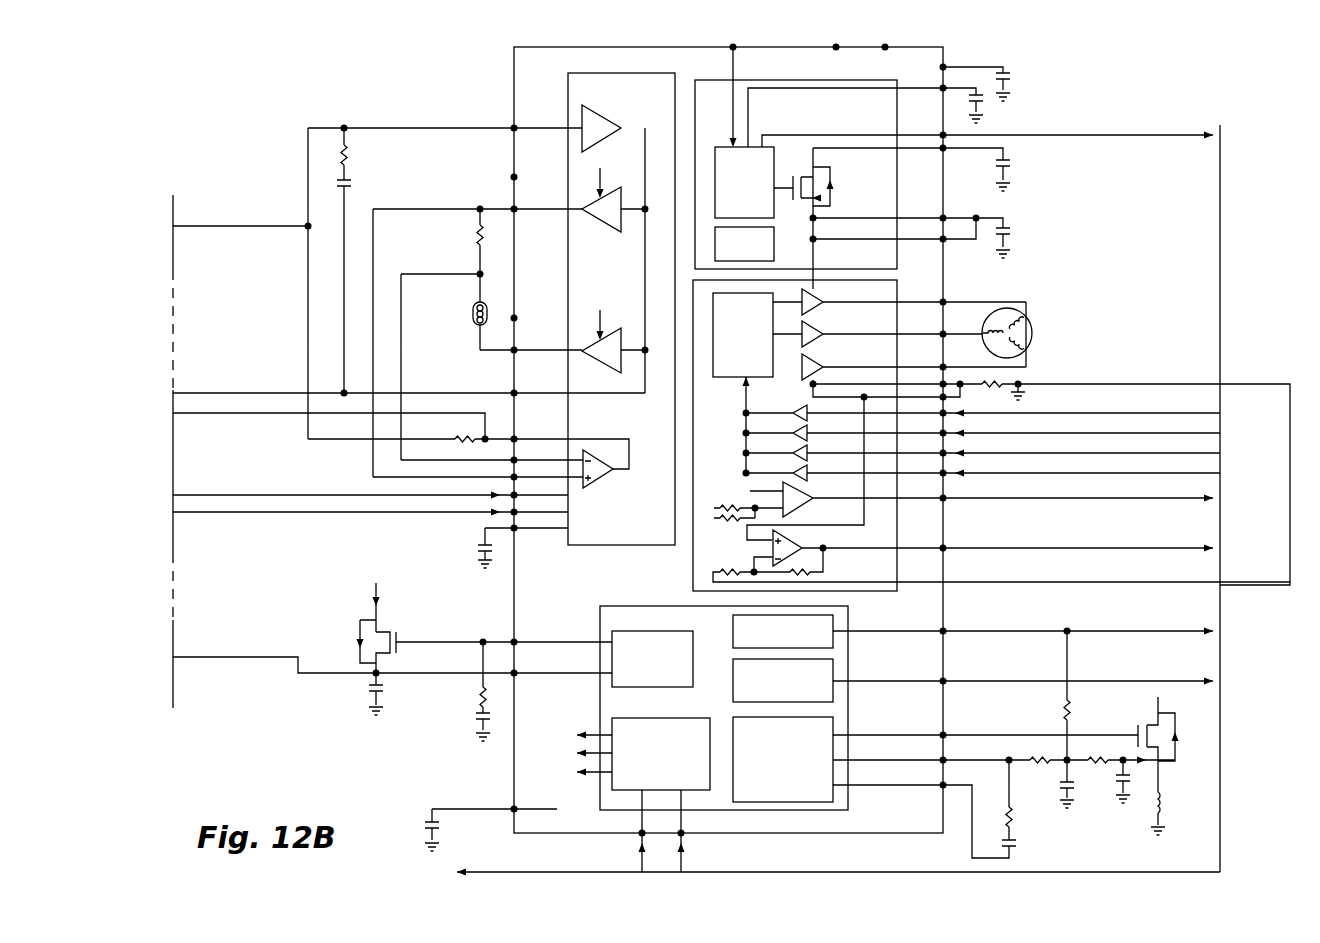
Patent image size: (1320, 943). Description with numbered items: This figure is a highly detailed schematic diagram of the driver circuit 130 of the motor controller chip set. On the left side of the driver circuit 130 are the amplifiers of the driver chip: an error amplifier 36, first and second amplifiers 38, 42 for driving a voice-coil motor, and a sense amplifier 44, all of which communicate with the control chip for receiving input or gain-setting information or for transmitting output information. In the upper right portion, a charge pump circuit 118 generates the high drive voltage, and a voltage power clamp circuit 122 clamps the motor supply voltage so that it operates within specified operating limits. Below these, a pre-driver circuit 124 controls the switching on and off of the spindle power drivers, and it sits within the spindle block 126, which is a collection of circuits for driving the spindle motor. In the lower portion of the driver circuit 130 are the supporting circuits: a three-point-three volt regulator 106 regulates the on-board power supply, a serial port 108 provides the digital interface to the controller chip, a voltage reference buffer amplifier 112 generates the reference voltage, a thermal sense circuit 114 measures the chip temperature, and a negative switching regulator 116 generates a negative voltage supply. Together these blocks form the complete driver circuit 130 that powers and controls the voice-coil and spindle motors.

The driver circuit 130 is at (232, 70).
The error amplifier 36 is at (598, 114).
The first amplifier 38 is at (600, 220).
The second amplifier 42 is at (614, 330).
The sense amplifier 44 is at (602, 481).
The charge pump circuit 118 is at (796, 174).
The voltage power clamp circuit 122 is at (744, 244).
The pre-driver circuit 124 is at (743, 335).
The spindle block 126 is at (693, 578).
The 3.3 volt regulator 106 is at (652, 659).
The serial port 108 is at (661, 754).
The voltage reference buffer amplifier 112 is at (783, 631).
The thermal sense circuit 114 is at (783, 680).
The negative switching regulator 116 is at (783, 759).